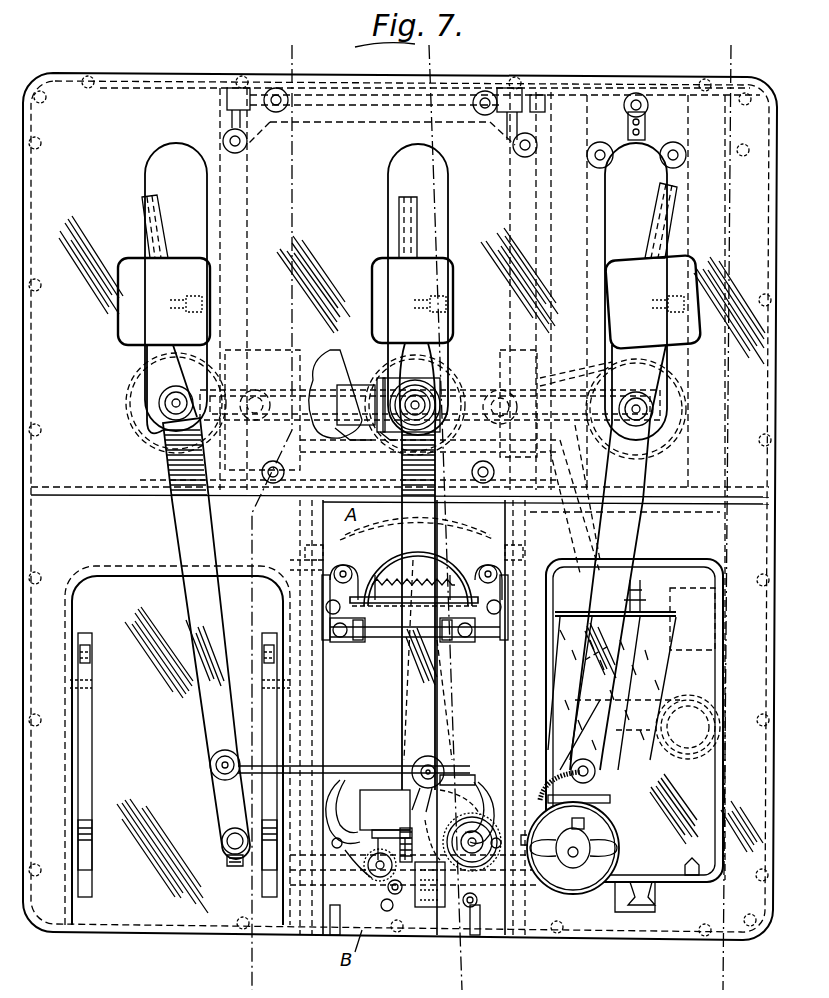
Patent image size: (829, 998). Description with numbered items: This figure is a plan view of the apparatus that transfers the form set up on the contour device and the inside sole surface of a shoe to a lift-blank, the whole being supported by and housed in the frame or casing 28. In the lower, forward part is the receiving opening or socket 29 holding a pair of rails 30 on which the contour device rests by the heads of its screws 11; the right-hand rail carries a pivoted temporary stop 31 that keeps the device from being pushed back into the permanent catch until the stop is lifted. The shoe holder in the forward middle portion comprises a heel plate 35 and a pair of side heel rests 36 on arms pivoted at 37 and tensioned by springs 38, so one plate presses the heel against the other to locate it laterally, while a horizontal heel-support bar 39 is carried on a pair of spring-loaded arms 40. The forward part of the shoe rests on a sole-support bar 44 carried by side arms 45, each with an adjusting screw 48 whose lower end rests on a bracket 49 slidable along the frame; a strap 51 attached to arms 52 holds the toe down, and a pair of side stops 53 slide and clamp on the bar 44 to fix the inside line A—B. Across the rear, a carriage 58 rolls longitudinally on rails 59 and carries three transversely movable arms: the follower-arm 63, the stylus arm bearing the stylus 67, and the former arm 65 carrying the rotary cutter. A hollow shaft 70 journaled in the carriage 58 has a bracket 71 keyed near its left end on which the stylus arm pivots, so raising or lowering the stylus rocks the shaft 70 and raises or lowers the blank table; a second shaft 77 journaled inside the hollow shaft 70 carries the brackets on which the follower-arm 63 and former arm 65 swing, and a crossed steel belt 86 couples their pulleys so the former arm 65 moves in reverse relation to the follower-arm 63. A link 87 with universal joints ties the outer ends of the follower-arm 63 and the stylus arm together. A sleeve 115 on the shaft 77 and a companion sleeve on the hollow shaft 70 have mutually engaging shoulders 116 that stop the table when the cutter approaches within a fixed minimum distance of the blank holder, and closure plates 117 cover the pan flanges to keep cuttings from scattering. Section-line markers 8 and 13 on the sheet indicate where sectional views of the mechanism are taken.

The frame or casing 28 is at (112, 73).
The section line 8 is at (242, 971).
The screws 11 is at (453, 986).
The section line 13 is at (714, 972).
The rails 59 is at (245, 237).
The follower-arm 63 is at (188, 537).
The stylus 67 is at (428, 526).
The belt 86 is at (612, 360).
The carriage 58 is at (283, 395).
The complementary sleeve 115 is at (352, 390).
The second shaft 77 is at (326, 385).
The shoulders 116 is at (360, 428).
The closure plates 117 is at (392, 432).
The bracket 71 is at (445, 375).
The hollow shaft 70 is at (452, 392).
The receiving opening or socket 29 is at (136, 578).
The temporary stop 31 is at (90, 662).
The rails 30 is at (84, 724).
The link 87 is at (245, 768).
The strap 51 is at (436, 567).
The arms 52 is at (460, 582).
The side stops 53 is at (350, 630).
The horizontal bar 44 is at (392, 634).
The bracket 49 is at (410, 640).
The adjusting screw 48 is at (470, 643).
The side arms 45 is at (500, 640).
The side heel rests 36 is at (350, 766).
The arms 40 is at (375, 780).
The bar 39 is at (445, 762).
The heel plate 35 is at (405, 826).
The springs 38 is at (370, 878).
The pivot 37 is at (400, 880).
The former arm 65 is at (632, 535).